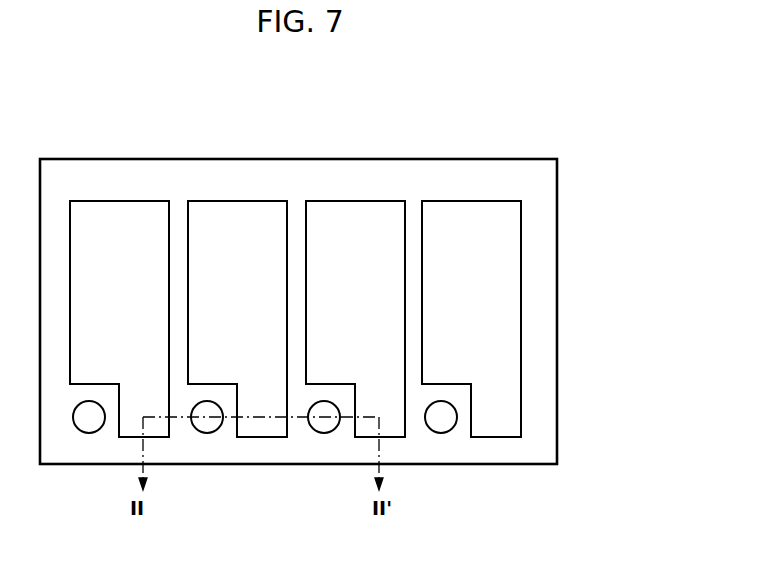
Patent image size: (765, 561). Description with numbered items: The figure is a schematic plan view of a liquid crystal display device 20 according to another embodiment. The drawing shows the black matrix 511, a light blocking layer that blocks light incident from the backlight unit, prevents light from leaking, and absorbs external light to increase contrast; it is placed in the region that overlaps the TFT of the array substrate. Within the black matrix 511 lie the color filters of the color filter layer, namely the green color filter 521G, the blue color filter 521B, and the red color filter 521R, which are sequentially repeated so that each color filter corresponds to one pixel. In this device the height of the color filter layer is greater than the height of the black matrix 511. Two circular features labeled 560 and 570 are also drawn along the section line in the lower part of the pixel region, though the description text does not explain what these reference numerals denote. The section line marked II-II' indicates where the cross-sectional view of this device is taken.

The liquid crystal display device 20 is at (586, 153).
The black matrix 511 is at (545, 400).
The green color filter 521G is at (119, 201).
The blue color filter 521B is at (238, 201).
The red color filter 521R is at (355, 201).
The contact hole 560 is at (207, 428).
The contact hole 570 is at (324, 428).